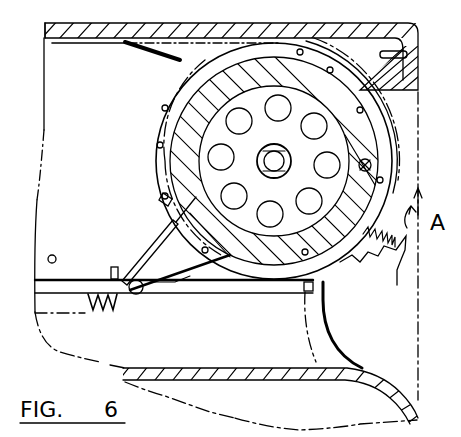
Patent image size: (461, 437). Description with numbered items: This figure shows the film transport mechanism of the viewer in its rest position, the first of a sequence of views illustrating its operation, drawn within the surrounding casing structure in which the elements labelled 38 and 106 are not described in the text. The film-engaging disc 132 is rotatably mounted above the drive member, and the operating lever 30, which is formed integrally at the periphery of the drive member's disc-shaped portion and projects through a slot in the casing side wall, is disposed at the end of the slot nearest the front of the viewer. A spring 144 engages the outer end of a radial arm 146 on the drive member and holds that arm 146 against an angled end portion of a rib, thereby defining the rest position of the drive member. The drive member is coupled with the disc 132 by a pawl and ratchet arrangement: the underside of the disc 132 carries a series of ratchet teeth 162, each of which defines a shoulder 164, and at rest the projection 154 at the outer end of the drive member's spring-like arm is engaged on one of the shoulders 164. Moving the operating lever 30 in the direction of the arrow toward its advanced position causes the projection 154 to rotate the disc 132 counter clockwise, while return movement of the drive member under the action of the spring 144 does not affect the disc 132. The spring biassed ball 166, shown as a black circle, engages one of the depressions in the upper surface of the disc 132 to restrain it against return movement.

The upper wall 38 is at (124, 22).
The ratchet wheel 106 is at (160, 83).
The film-engaging disc 132 is at (165, 112).
The projection 154 is at (162, 199).
The shoulder 164 is at (188, 212).
The spring biassed ball 166 is at (370, 165).
The operating lever 30 is at (395, 268).
The radial arm 146 is at (178, 265).
The ratchet teeth 162 is at (270, 278).
The spring 144 is at (107, 300).